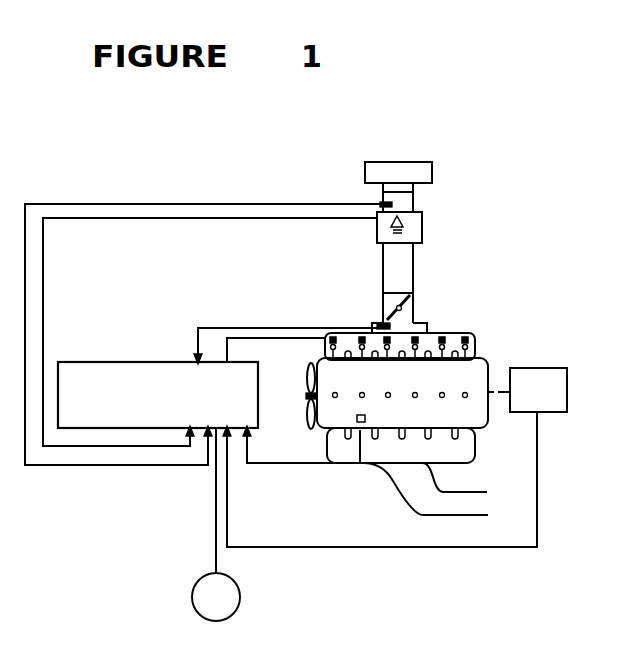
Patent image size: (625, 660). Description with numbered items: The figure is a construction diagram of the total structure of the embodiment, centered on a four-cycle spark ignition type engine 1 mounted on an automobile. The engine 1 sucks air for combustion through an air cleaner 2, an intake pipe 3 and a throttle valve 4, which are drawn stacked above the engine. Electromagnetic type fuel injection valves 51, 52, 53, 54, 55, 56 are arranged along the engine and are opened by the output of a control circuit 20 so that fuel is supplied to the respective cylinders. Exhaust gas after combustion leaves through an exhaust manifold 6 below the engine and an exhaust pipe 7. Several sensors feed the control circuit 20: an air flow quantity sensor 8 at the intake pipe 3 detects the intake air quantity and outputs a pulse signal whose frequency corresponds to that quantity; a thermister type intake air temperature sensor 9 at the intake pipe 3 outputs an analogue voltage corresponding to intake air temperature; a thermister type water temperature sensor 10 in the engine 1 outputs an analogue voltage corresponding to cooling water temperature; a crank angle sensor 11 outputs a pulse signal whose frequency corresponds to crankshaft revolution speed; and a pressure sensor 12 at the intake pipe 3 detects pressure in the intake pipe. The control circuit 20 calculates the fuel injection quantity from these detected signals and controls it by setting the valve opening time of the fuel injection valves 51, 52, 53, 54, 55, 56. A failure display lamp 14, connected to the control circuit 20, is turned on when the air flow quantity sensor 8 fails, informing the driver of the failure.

The engine 1 is at (483, 358).
The air cleaner 2 is at (432, 172).
The intake pipe 3 is at (413, 272).
The throttle valve 4 is at (408, 305).
The exhaust manifold 6 is at (477, 450).
The exhaust pipe 7 is at (447, 515).
The air flow quantity sensor 8 is at (422, 228).
The intake air temperature sensor 9 is at (380, 204).
The water temperature sensor 10 is at (325, 396).
The crank angle sensor 11 is at (538, 368).
The pressure sensor 12 is at (380, 325).
The failure display lamp 14 is at (240, 597).
The control circuit 20 is at (124, 362).
The fuel injection valve 51 is at (334, 384).
The fuel injection valve 52 is at (400, 393).
The fuel injection valve 53 is at (399, 411).
The fuel injection valve 54 is at (452, 393).
The fuel injection valve 55 is at (452, 411).
The fuel injection valve 56 is at (467, 384).